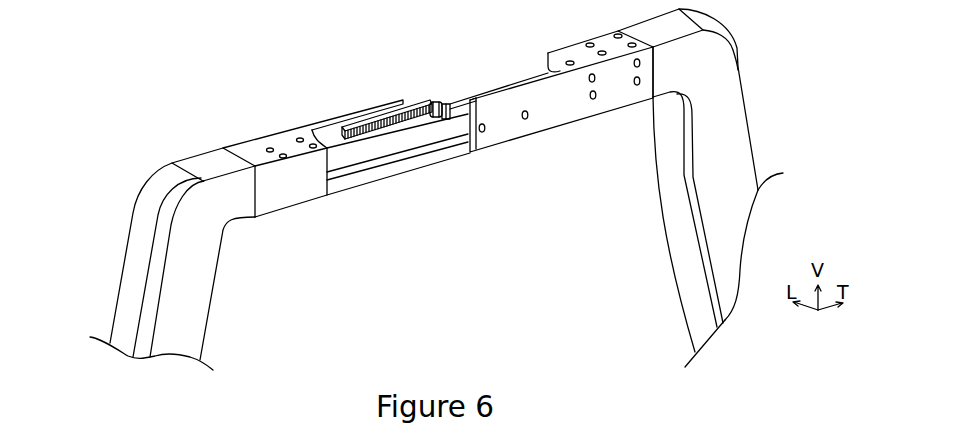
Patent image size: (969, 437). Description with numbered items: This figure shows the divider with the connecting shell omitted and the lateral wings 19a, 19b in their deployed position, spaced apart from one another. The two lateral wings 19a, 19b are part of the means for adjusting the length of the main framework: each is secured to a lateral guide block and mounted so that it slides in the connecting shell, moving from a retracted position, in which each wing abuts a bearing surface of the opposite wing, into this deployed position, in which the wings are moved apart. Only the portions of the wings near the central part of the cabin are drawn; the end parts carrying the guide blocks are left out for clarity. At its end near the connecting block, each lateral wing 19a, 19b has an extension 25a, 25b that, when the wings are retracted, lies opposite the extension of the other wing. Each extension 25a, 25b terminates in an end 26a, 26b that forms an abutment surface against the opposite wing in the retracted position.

The lateral wing 19a is at (133, 267).
The lateral wing 19b is at (730, 137).
The extension 25a is at (318, 128).
The extension 25b is at (557, 110).
The end 26a is at (408, 101).
The end 26b is at (470, 137).